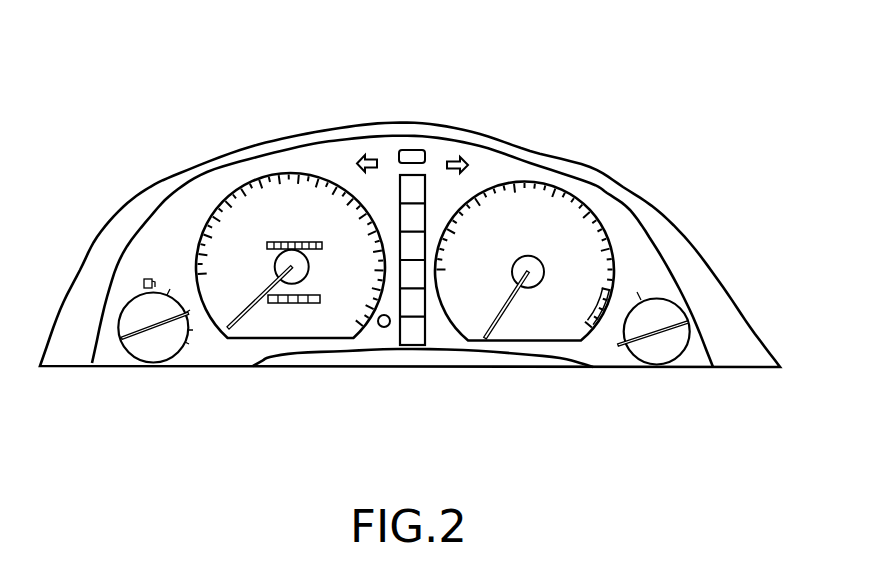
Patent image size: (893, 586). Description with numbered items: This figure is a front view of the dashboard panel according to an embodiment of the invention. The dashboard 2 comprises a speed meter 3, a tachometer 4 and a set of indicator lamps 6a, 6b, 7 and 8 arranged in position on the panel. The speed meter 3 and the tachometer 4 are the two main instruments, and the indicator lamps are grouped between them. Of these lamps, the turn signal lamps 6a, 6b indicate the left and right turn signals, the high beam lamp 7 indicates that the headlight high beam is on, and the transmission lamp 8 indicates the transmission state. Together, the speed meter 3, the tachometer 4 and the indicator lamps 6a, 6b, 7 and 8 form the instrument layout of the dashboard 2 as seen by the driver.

The dashboard 2 is at (200, 157).
The speed meter 3 is at (273, 332).
The tachometer 4 is at (523, 335).
The turn signal lamp 6a is at (368, 157).
The turn signal lamp 6b is at (455, 157).
The high beam lamp 7 is at (413, 147).
The transmission lamp 8 is at (397, 337).